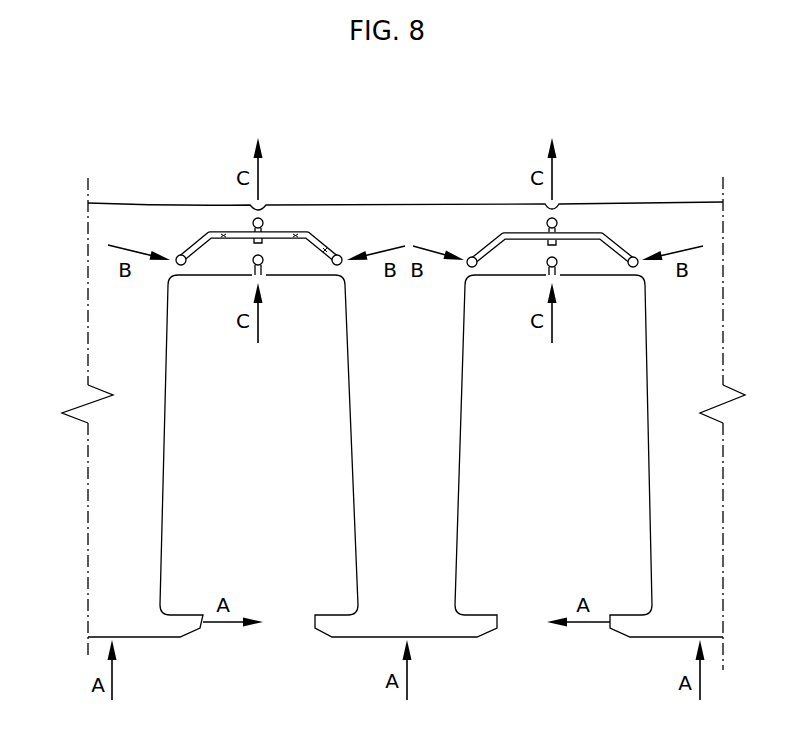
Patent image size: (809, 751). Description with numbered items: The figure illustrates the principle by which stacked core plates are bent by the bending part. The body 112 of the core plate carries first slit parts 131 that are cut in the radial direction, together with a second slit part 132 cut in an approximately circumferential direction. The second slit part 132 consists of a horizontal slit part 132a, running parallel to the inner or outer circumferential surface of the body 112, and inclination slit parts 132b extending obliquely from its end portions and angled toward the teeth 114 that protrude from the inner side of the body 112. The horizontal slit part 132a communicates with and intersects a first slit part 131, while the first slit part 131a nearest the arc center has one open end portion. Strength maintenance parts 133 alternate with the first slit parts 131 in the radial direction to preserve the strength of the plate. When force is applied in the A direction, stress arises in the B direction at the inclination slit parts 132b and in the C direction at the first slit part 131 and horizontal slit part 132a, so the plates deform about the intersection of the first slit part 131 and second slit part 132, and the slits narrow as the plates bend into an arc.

The body 112 is at (228, 206).
The teeth 114 is at (100, 480).
The first slit part 131 is at (373, 184).
The first slit part 131a is at (263, 262).
The second slit part 132 is at (125, 140).
The horizontal slit part 132a is at (218, 233).
The inclination slit part 132b is at (185, 250).
The strength maintenance part 133 is at (262, 219).